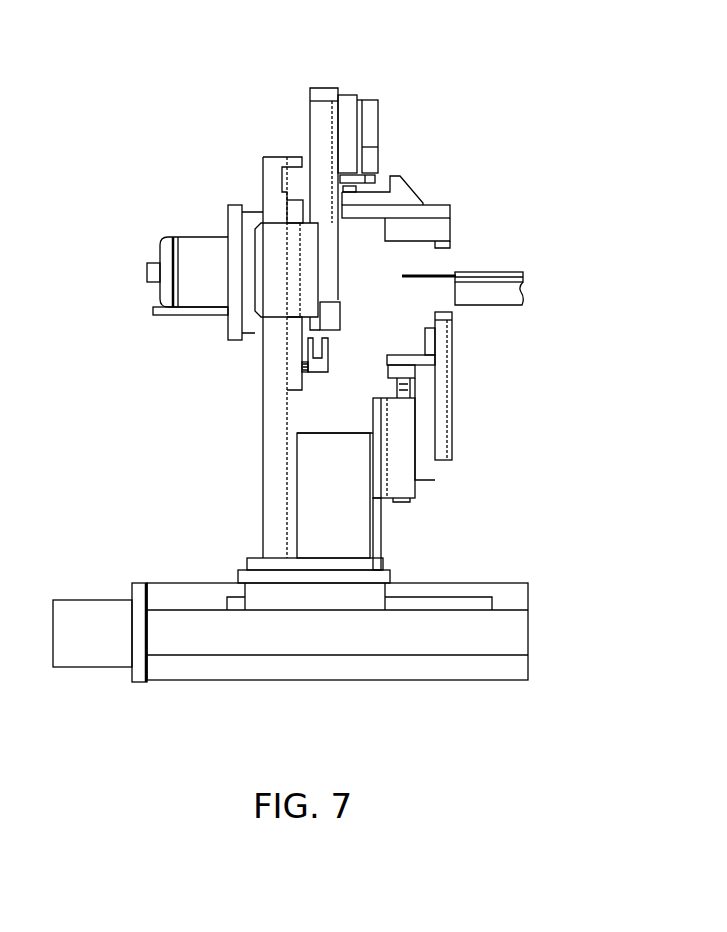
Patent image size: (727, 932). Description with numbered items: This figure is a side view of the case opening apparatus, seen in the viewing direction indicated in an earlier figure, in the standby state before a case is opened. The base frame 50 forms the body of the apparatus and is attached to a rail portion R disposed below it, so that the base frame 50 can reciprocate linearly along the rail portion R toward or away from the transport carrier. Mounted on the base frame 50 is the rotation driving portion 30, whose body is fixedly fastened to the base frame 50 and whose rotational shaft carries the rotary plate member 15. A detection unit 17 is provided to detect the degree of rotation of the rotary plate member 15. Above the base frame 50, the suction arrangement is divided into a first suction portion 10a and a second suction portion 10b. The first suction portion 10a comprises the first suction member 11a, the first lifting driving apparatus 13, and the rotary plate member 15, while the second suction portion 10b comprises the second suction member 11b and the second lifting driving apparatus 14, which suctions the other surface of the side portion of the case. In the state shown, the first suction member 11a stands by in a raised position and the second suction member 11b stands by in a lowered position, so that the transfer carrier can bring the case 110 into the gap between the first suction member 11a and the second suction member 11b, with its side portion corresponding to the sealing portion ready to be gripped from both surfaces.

The rotary plate member 15 is at (325, 92).
The first lifting driving apparatus 13 is at (348, 105).
The first suction portion 10a is at (421, 170).
The first suction member 11a is at (447, 230).
The case 110 is at (508, 272).
The second suction member 11b is at (447, 328).
The second suction portion 10b is at (469, 441).
The second lifting driving apparatus 14 is at (407, 422).
The rotation driving portion 30 is at (192, 288).
The detection unit 17 is at (320, 370).
The base frame 50 is at (320, 492).
The rail portion R is at (305, 632).